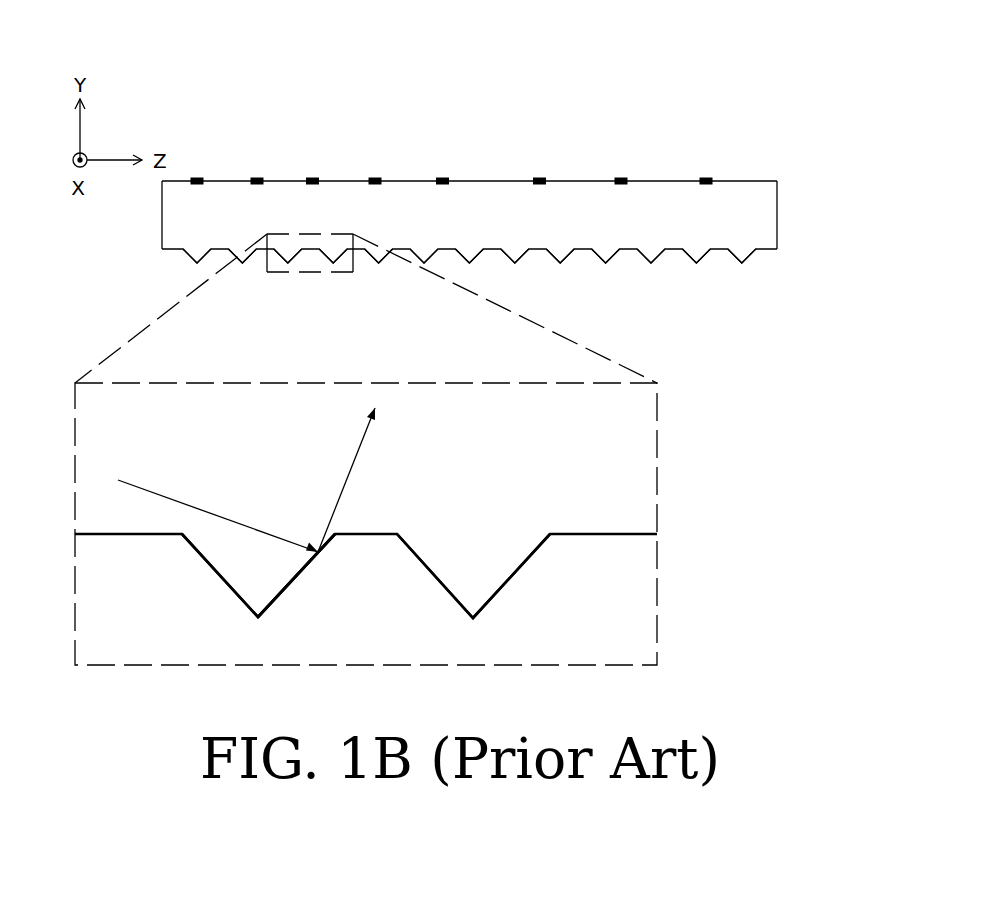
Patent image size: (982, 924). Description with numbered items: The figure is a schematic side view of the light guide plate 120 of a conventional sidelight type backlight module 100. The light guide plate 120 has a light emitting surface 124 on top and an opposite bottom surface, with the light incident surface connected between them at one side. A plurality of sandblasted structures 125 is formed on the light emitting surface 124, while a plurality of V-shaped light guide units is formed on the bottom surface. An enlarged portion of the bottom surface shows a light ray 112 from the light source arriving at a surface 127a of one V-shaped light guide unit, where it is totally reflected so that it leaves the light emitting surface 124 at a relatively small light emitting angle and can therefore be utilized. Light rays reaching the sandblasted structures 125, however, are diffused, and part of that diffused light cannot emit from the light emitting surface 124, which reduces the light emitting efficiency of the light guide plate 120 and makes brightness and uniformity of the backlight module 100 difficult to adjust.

The backlight module 100 is at (745, 678).
The light ray 112 is at (230, 522).
The light guide plate 120 is at (767, 217).
The light emitting surface 124 is at (753, 183).
The sandblasted structures 125 is at (620, 176).
The surface of the V-shaped light guide unit 127a is at (278, 597).